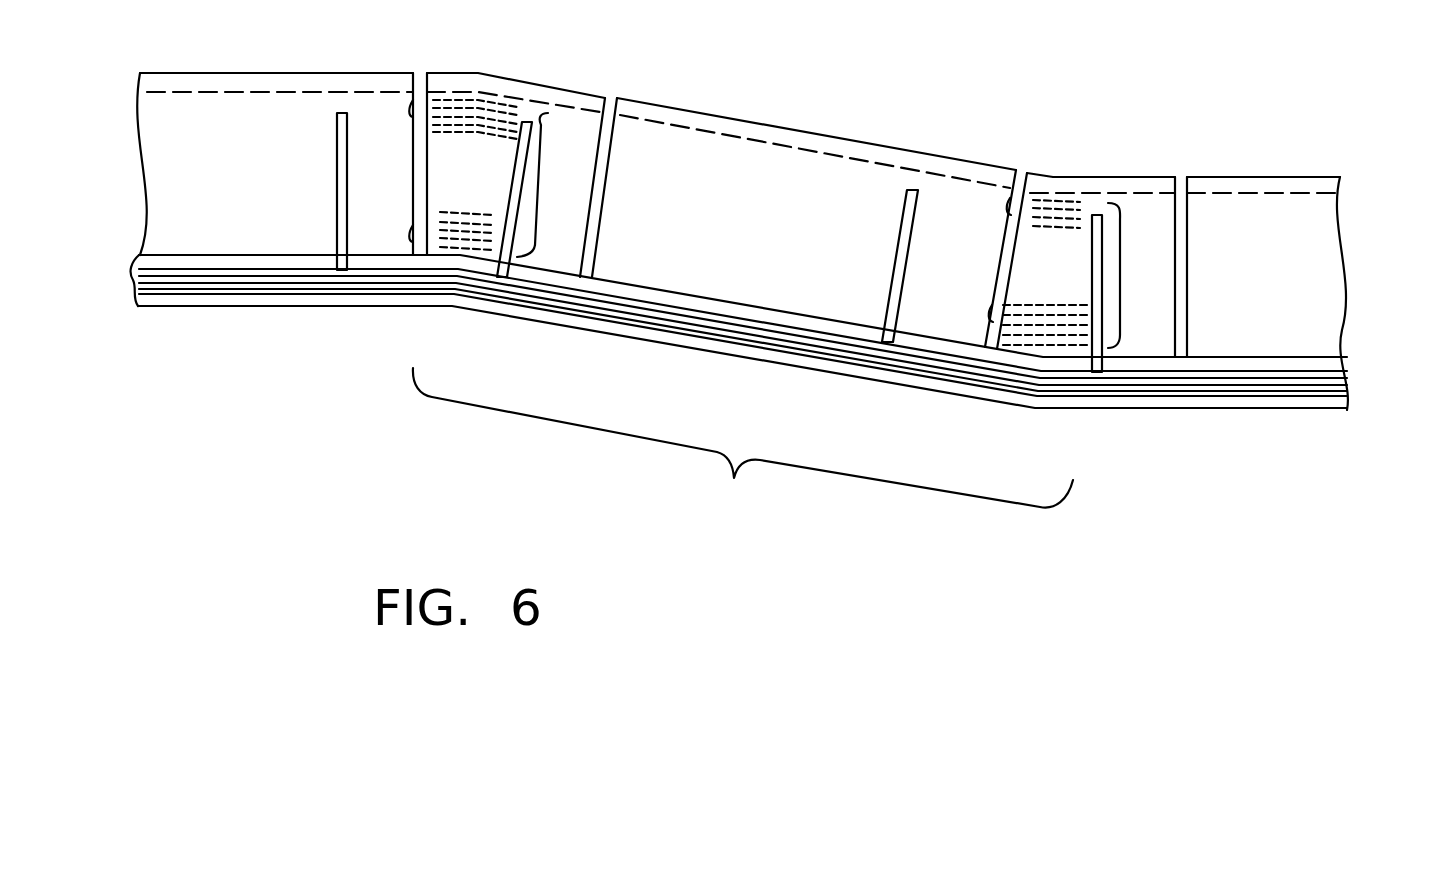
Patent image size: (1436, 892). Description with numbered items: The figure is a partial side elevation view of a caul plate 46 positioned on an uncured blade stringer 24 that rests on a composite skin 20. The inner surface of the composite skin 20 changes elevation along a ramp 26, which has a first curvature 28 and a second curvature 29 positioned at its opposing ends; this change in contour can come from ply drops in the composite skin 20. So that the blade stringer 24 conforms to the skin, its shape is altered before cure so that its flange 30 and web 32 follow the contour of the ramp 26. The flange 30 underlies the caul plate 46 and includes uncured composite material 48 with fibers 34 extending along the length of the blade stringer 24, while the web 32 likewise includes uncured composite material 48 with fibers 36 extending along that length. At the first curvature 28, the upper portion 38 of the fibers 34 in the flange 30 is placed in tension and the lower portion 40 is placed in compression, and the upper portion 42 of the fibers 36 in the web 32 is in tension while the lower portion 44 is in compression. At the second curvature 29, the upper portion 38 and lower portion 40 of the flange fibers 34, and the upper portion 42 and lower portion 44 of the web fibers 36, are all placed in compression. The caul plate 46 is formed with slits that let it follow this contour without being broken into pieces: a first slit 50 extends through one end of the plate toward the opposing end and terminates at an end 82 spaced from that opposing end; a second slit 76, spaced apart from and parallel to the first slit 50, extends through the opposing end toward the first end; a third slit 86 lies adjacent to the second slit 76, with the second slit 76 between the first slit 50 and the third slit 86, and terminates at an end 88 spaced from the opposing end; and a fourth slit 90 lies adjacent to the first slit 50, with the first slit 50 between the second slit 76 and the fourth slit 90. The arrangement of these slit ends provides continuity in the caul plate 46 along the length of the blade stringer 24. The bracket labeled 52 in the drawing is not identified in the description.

The composite skin 20 is at (148, 304).
The blade stringer 24 is at (676, 230).
The ramp 26 is at (733, 482).
The first curvature 28 is at (445, 320).
The second curvature 29 is at (1025, 420).
The flange 30 is at (128, 278).
The web 32 is at (866, 144).
The fibers 34 is at (290, 282).
The fibers 36 is at (542, 167).
The upper portion 38 is at (427, 284).
The lower portion 40 is at (457, 300).
The upper portion 42 is at (413, 112).
The lower portion 44 is at (415, 240).
The caul plate 46 is at (753, 160).
The uncured composite material 48 is at (343, 148).
The first slit 50 is at (506, 174).
The top board 52 is at (272, 275).
The second slit 76 is at (417, 58).
The end of first slit 82 is at (528, 120).
The third slit 86 is at (360, 120).
The end of third slit 88 is at (343, 112).
The fourth slit 90 is at (617, 126).